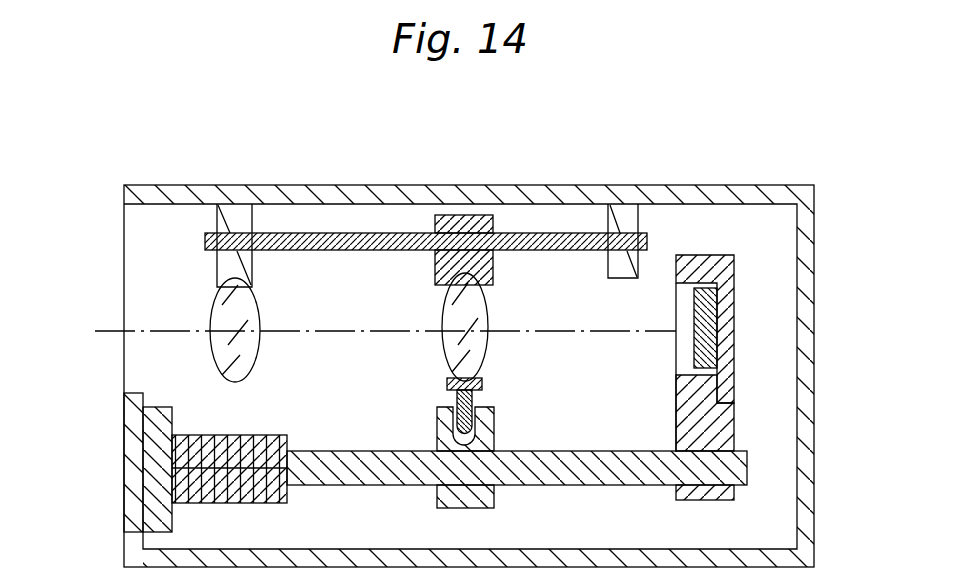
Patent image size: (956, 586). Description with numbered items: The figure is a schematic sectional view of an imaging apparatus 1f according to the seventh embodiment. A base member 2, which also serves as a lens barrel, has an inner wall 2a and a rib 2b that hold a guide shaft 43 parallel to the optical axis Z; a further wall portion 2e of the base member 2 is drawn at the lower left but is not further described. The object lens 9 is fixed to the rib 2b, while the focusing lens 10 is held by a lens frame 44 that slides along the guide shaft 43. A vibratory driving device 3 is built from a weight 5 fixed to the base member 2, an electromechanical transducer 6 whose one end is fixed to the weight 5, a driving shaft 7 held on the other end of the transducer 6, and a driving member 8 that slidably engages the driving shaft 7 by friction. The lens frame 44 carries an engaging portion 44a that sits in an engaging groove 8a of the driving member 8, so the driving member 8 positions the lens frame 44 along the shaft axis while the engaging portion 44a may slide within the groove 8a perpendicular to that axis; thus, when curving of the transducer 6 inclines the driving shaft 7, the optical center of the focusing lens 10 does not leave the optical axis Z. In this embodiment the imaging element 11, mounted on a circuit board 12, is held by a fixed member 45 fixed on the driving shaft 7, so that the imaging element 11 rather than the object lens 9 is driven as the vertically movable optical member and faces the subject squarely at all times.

The imaging apparatus 1f is at (400, 182).
The base member 2 is at (532, 182).
The inner wall 2a is at (608, 266).
The rib 2b is at (217, 268).
The housing wall flange 2e is at (124, 482).
The optical axis Z is at (374, 333).
The vibratory driving device 3 is at (328, 438).
The weight 5 is at (160, 406).
The electromechanical transducer 6 is at (273, 434).
The driving shaft 7 is at (577, 450).
The driving member 8 is at (434, 499).
The engaging groove 8a is at (483, 390).
The object lens 9 is at (212, 304).
The focusing lens 10 is at (489, 308).
The imaging element 11 is at (694, 346).
The circuit board 12 is at (735, 298).
The guide shaft 43 is at (345, 252).
The lens frame 44 is at (435, 272).
The engaging portion 44a is at (436, 416).
The fixed member 45 is at (676, 402).